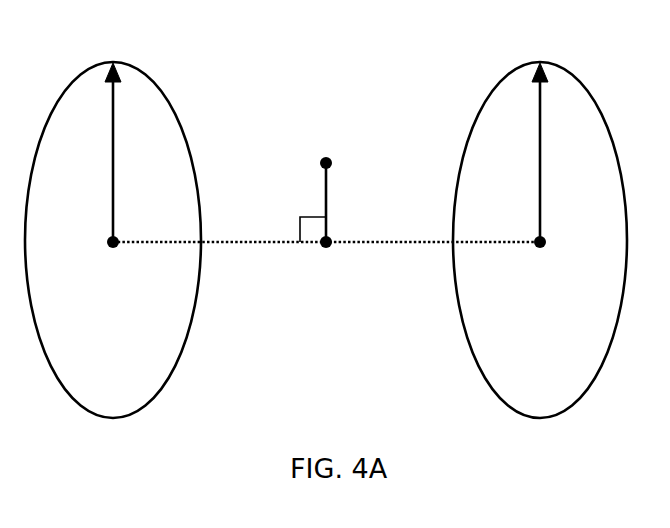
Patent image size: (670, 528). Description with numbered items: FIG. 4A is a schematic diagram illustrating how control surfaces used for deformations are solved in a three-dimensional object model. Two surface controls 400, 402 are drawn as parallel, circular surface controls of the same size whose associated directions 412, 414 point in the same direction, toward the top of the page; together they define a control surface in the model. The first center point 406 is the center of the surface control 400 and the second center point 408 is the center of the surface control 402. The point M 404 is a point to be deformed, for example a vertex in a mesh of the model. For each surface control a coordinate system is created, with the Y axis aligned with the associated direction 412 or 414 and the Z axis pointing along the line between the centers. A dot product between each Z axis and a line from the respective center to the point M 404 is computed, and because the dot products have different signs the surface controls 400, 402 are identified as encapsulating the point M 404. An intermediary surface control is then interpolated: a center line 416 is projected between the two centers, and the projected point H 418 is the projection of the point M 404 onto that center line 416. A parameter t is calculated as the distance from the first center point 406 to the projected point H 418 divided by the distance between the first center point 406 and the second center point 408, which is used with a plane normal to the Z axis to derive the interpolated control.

The surface control 400 is at (540, 418).
The surface control 402 is at (113, 418).
The point M 404 is at (320, 161).
The point O1 406 is at (537, 238).
The point O2 408 is at (110, 238).
The associated direction 412 is at (540, 183).
The associated direction 414 is at (113, 183).
The line O1O2 416 is at (412, 243).
The point H 418 is at (332, 239).